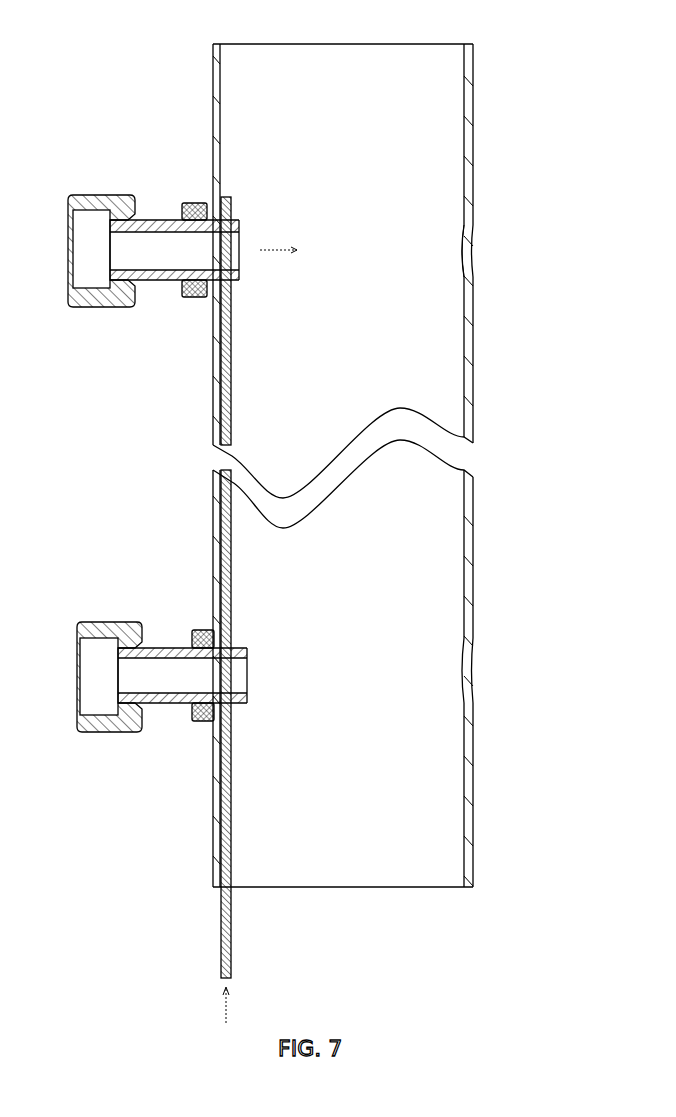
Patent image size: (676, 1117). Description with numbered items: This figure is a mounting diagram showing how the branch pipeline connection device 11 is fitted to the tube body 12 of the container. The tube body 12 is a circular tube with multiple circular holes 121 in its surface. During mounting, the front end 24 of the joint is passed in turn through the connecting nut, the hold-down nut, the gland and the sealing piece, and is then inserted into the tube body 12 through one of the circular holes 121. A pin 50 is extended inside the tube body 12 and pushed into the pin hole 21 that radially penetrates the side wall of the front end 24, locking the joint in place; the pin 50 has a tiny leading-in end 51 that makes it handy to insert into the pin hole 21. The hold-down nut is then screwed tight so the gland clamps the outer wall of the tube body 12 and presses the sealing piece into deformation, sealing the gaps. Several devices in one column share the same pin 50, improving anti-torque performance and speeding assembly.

The branch pipeline connection device 11 is at (143, 170).
The tube body 12 is at (473, 373).
The circular holes 121 is at (472, 250).
The pin hole 21 is at (218, 236).
The front end 24 is at (233, 221).
The pin 50 is at (217, 942).
The leading-in end 51 is at (228, 281).